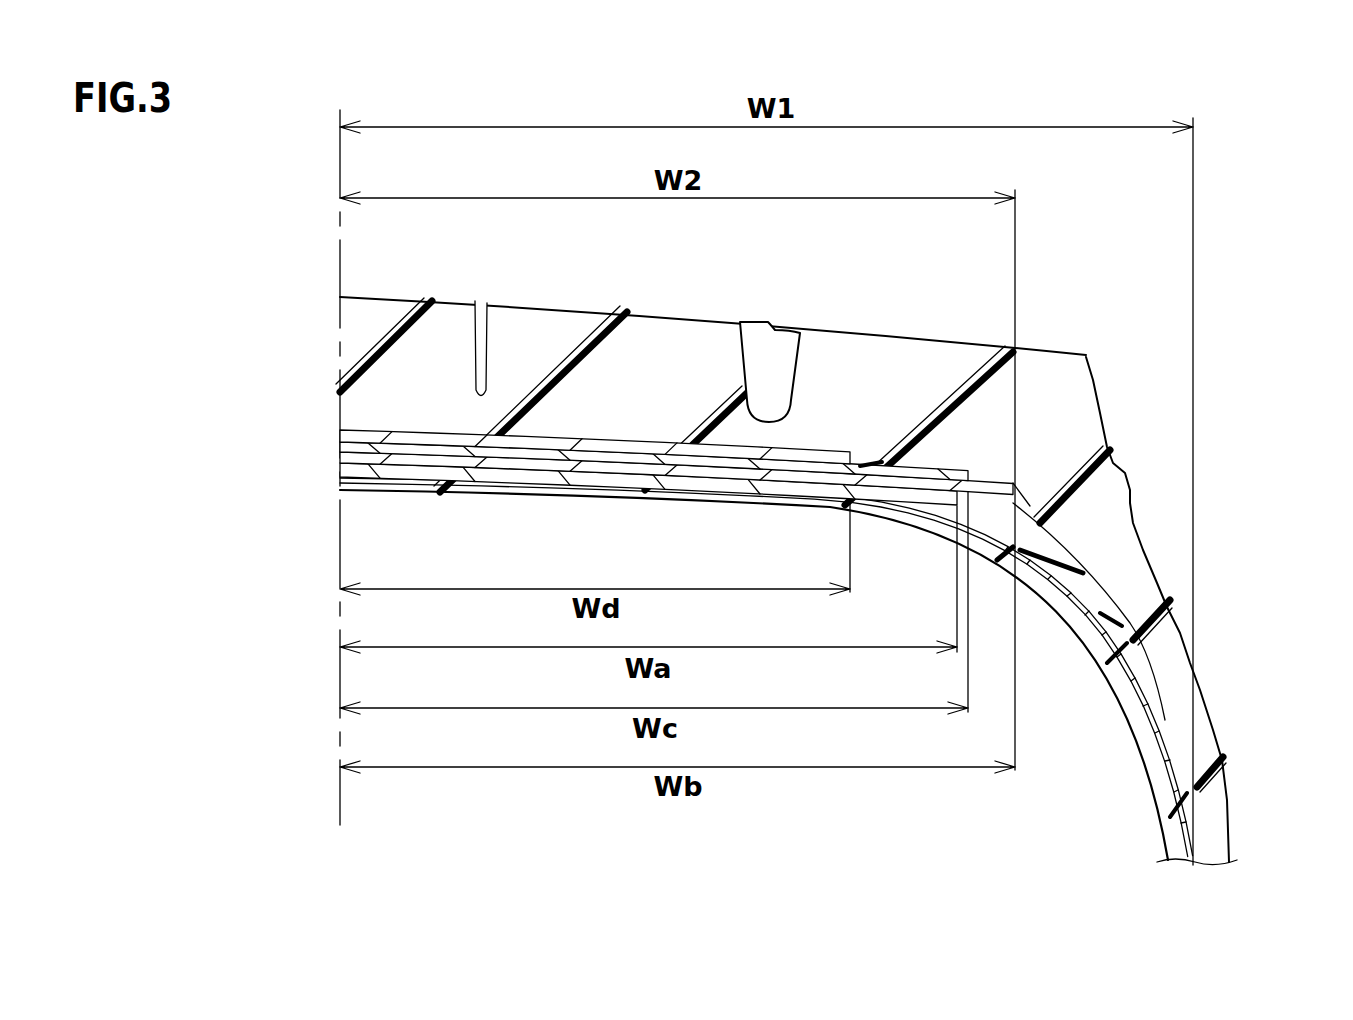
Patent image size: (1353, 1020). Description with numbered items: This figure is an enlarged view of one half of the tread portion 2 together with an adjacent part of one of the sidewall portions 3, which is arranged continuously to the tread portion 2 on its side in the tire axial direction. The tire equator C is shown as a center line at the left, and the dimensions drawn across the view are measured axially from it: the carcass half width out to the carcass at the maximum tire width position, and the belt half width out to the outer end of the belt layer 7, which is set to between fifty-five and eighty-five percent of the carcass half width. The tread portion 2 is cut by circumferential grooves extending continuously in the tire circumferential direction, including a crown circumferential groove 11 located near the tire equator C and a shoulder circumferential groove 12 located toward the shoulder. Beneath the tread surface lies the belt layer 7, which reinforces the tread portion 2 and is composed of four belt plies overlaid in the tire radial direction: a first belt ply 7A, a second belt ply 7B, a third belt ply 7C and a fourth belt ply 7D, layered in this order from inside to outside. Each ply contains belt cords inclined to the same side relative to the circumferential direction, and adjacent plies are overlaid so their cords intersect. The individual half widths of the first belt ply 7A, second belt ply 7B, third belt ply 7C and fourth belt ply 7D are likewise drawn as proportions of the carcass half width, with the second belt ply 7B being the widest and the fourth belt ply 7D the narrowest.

The tread portion 2 is at (1058, 315).
The sidewall portion 3 is at (1232, 729).
The belt layer 7 is at (642, 440).
The first belt ply 7A is at (414, 468).
The second belt ply 7B is at (525, 458).
The third belt ply 7C is at (618, 450).
The fourth belt ply 7D is at (752, 447).
The crown circumferential groove 11 is at (482, 317).
The shoulder circumferential groove 12 is at (768, 368).
The tire equator C is at (338, 158).